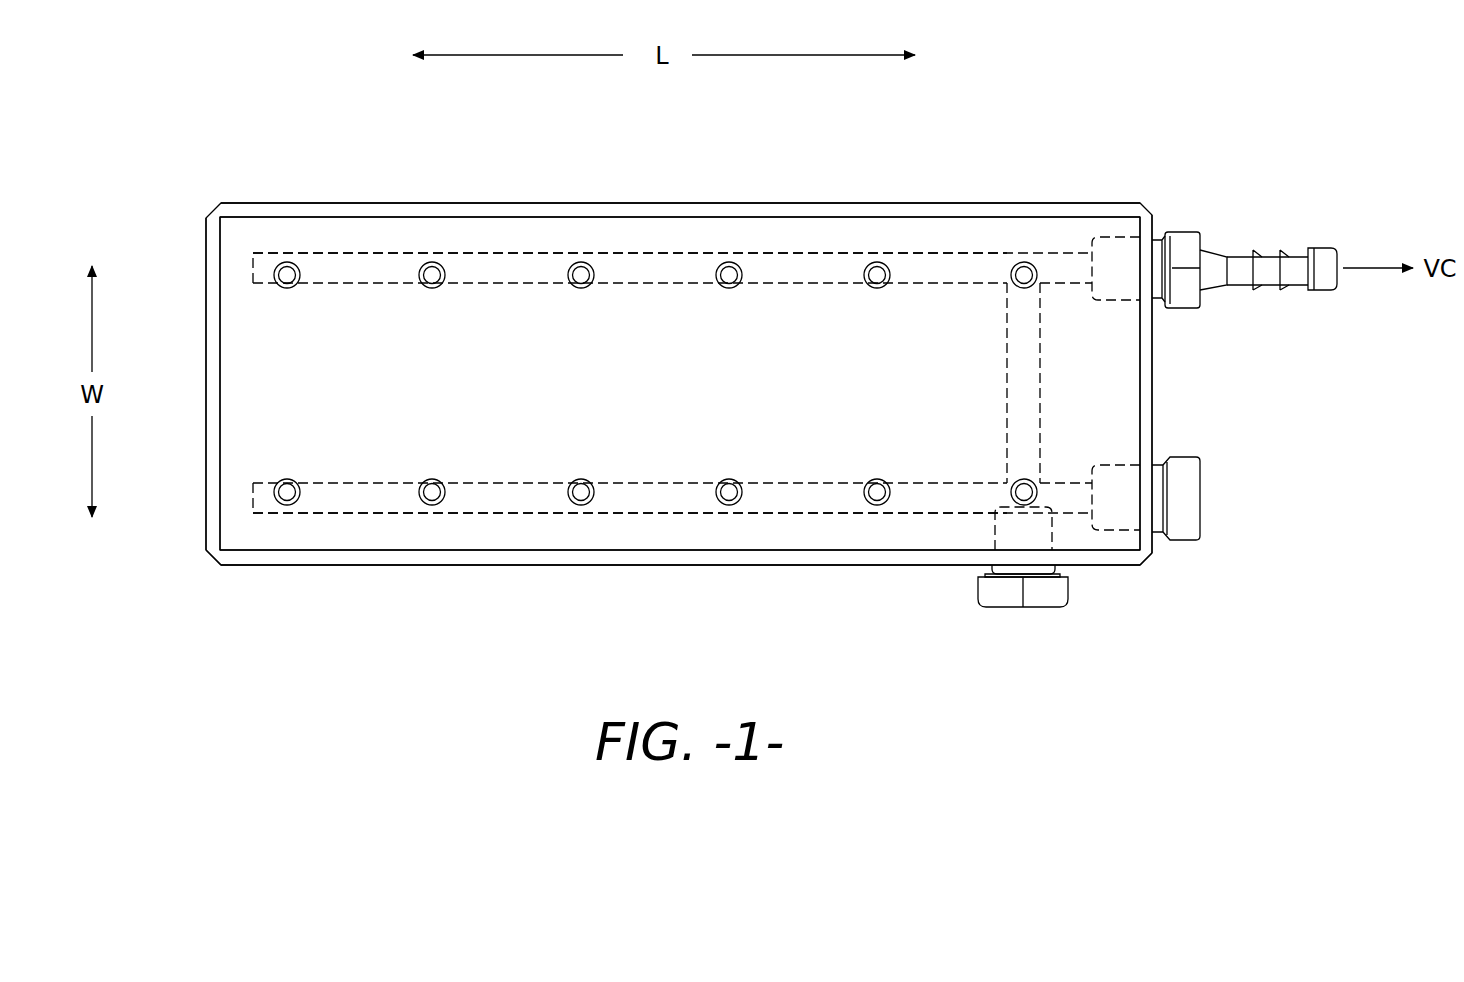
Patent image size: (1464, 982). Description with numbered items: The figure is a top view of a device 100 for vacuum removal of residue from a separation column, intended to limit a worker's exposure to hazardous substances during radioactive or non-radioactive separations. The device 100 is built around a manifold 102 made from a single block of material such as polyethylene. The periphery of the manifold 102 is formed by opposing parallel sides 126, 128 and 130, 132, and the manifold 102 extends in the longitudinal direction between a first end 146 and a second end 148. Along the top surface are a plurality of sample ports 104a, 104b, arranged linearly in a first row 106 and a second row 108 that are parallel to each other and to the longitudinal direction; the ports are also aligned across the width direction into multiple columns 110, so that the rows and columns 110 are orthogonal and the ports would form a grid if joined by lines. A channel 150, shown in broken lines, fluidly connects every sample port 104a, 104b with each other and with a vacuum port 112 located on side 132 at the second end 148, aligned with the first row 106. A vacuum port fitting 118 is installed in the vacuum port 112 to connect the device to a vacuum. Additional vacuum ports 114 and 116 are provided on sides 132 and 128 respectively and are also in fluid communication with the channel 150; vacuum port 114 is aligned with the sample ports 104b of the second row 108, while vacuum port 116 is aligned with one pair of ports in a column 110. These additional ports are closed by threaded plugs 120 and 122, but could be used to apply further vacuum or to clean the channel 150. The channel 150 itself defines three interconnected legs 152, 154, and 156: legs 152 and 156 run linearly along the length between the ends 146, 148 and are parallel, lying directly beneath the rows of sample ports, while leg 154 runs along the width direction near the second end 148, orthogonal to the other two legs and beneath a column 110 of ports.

The device 100 is at (1110, 120).
The manifold 102 is at (262, 400).
The sample ports 104a is at (270, 263).
The sample ports 104b is at (269, 508).
The first row 106 is at (200, 268).
The second row 108 is at (189, 505).
The columns 110 is at (283, 248).
The vacuum port 112 is at (1118, 245).
The vacuum port 114 is at (1117, 522).
The vacuum port 116 is at (1039, 536).
The vacuum port fitting 118 is at (1208, 262).
The plug 120 is at (1192, 493).
The plug 122 is at (1030, 608).
The side 126 is at (614, 200).
The side 128 is at (627, 568).
The side 130 is at (205, 339).
The side 132 is at (1155, 398).
The first end 146 is at (205, 566).
The second end 148 is at (1155, 566).
The channel 150 is at (637, 490).
The leg 152 is at (349, 498).
The leg 154 is at (1015, 430).
The leg 156 is at (360, 272).